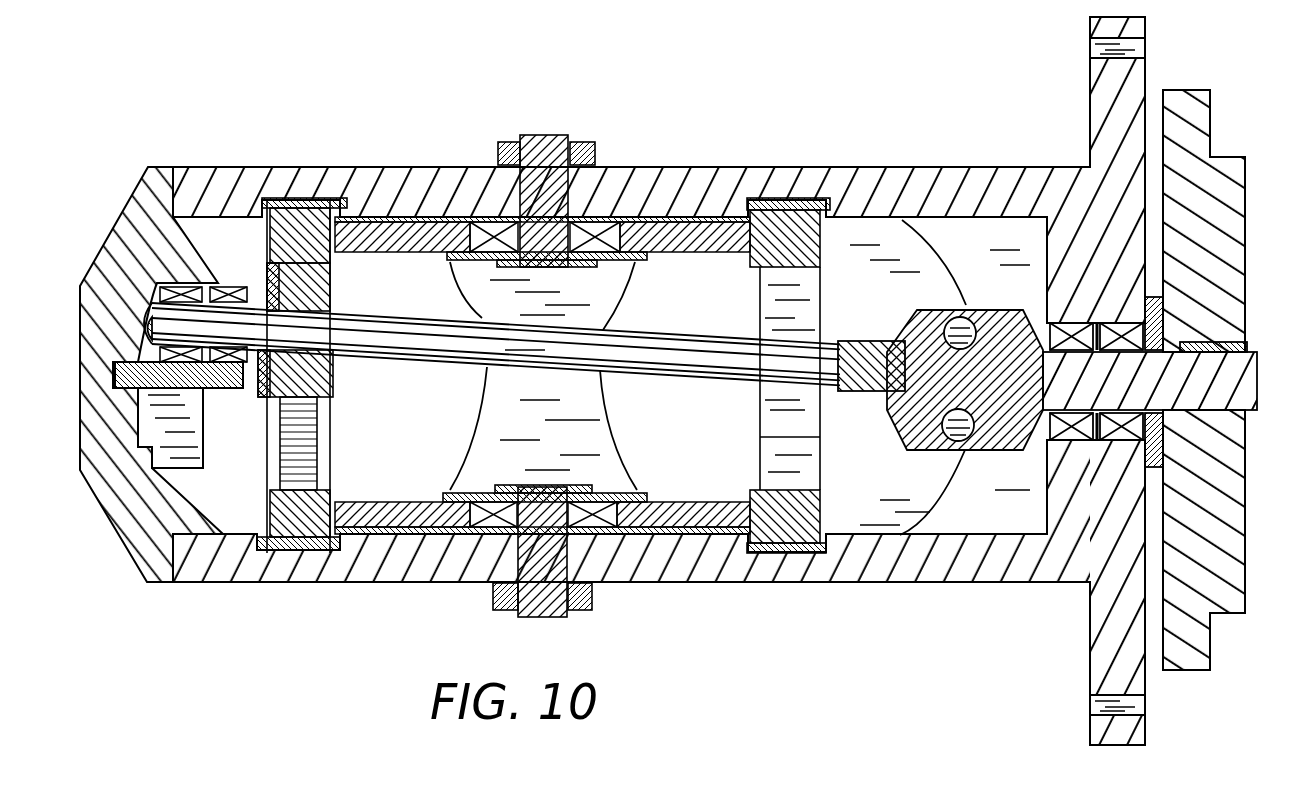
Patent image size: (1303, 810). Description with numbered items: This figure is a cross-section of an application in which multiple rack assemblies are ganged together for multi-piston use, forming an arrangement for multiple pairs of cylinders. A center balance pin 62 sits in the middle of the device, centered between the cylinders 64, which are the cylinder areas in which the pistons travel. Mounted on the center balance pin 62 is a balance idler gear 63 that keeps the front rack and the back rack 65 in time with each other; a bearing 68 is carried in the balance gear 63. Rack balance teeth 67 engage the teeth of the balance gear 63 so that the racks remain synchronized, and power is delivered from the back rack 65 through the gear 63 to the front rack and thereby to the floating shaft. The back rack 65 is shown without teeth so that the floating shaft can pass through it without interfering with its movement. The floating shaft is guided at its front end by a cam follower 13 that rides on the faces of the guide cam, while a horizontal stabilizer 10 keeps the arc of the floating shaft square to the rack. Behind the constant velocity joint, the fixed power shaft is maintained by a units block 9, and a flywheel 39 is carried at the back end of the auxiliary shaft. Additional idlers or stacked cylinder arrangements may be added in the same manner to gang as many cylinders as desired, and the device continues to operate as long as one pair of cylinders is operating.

The units block 9 is at (925, 190).
The horizontal stabilizer 10 is at (148, 200).
The cam follower 13 is at (222, 283).
The flywheel 39 is at (1197, 115).
The center balance pin 62 is at (553, 150).
The balance idler gear 63 is at (718, 240).
The cylinder 64 is at (915, 300).
The back rack 65 is at (760, 335).
The rack balance teeth 67 is at (773, 513).
The bearing 68 is at (592, 230).